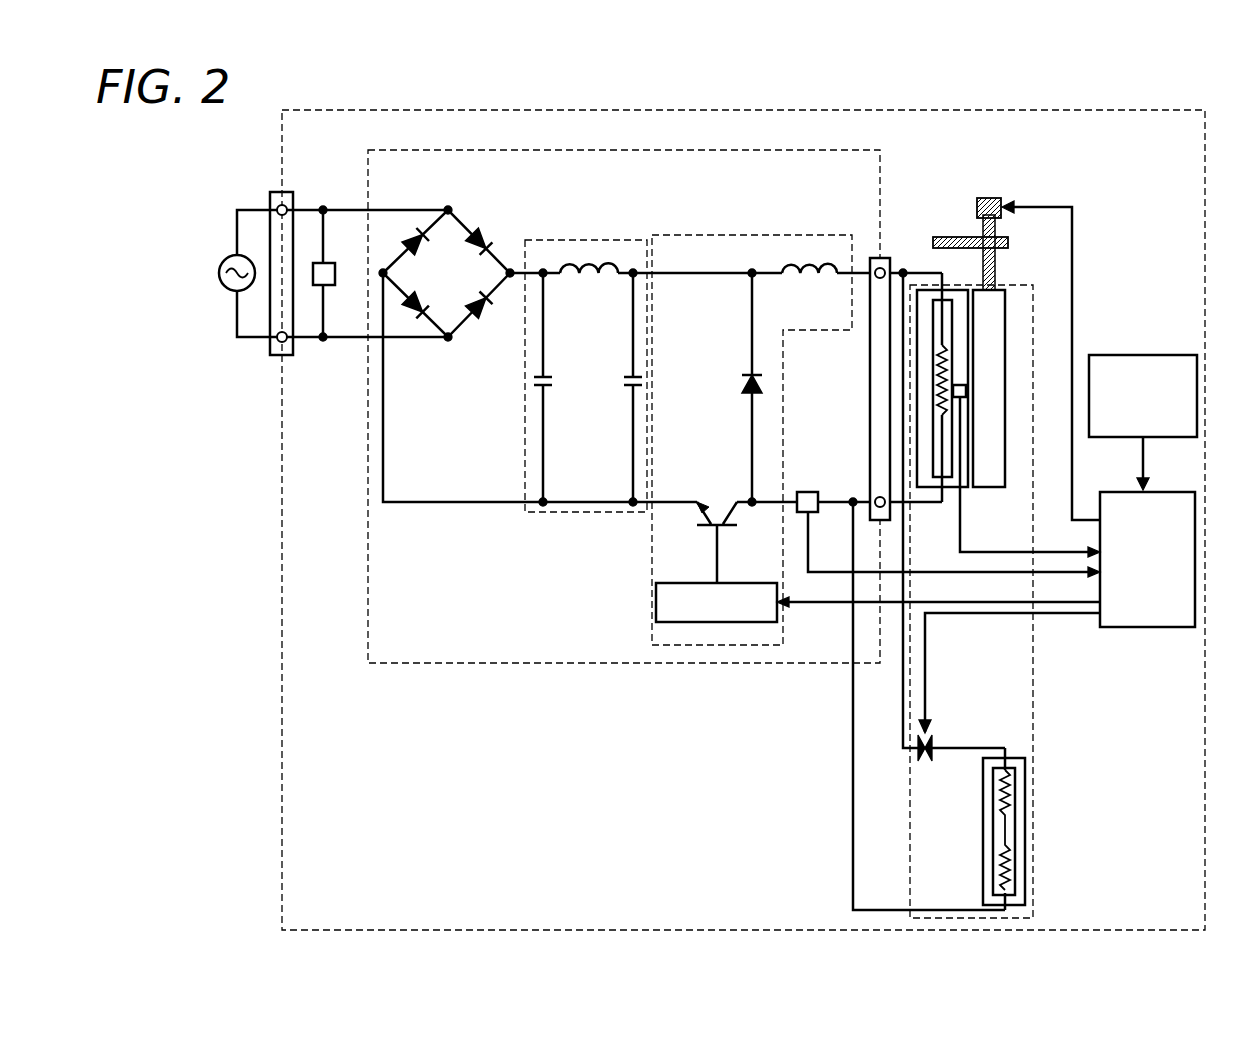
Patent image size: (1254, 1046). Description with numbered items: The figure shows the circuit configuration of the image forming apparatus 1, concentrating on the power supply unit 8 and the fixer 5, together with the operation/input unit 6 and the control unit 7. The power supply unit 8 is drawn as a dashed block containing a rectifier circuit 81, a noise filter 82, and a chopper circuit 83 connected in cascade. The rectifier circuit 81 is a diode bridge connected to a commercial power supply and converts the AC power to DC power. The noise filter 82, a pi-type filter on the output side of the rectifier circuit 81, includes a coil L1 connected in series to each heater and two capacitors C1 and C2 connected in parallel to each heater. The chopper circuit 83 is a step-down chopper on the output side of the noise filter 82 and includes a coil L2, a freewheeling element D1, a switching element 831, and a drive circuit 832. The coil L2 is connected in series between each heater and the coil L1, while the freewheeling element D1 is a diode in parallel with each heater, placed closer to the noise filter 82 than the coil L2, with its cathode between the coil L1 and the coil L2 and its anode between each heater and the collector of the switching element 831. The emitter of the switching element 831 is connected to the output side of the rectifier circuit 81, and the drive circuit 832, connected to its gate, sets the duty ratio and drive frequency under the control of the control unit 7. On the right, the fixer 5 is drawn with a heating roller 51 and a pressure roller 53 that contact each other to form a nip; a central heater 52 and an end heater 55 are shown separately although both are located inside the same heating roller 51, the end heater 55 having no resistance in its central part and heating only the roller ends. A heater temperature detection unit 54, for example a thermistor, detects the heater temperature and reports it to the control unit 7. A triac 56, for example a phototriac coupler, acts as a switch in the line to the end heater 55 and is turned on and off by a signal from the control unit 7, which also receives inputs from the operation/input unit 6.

The image forming apparatus 1 is at (1143, 108).
The fixer 5 is at (1036, 652).
The operation/input unit 6 is at (1160, 355).
The control unit 7 is at (1160, 492).
The power supply unit 8 is at (840, 150).
The heating roller 51 is at (970, 298).
The central heater 52 is at (953, 330).
The pressure roller 53 is at (1006, 360).
The heater temperature detection unit 54 is at (967, 391).
The end heater 55 is at (1017, 832).
The triac 56 is at (932, 755).
The rectifier circuit 81 is at (500, 230).
The noise filter 82 is at (592, 240).
The chopper circuit 83 is at (760, 235).
The switching element 831 is at (712, 498).
The drive circuit 832 is at (751, 583).
The capacitor C1 is at (540, 386).
The capacitor C2 is at (630, 386).
The freewheeling element D1 is at (745, 380).
The coil L1 is at (594, 276).
The coil (reactor) L2 is at (812, 276).